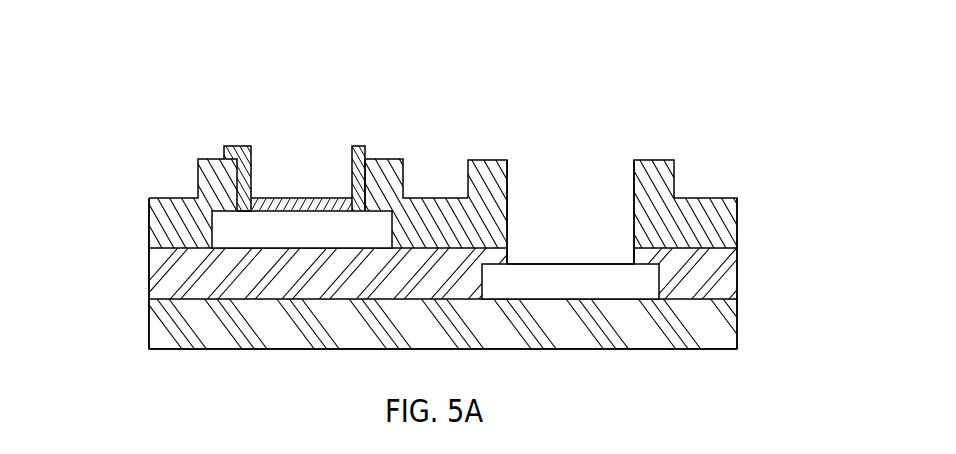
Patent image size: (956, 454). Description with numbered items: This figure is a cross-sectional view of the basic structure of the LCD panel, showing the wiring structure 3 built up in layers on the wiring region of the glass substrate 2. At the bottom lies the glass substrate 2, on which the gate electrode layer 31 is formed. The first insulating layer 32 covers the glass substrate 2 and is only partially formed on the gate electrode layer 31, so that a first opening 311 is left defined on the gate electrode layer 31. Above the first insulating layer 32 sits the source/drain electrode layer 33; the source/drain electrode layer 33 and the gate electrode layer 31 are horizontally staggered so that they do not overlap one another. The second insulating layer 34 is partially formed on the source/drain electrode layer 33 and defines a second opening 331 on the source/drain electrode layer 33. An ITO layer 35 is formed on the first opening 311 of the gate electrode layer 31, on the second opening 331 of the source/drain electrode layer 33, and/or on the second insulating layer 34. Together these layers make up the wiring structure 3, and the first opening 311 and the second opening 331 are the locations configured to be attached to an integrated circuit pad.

The wiring structure 3 is at (176, 108).
The glass substrate 2 is at (168, 332).
The first insulating layer 32 is at (720, 277).
The gate electrode layer 31 is at (573, 283).
The first opening 311 is at (588, 188).
The source/drain electrode layer 33 is at (230, 229).
The second opening 331 is at (299, 167).
The second insulating layer 34 is at (492, 167).
The ITO layer 35 is at (360, 155).